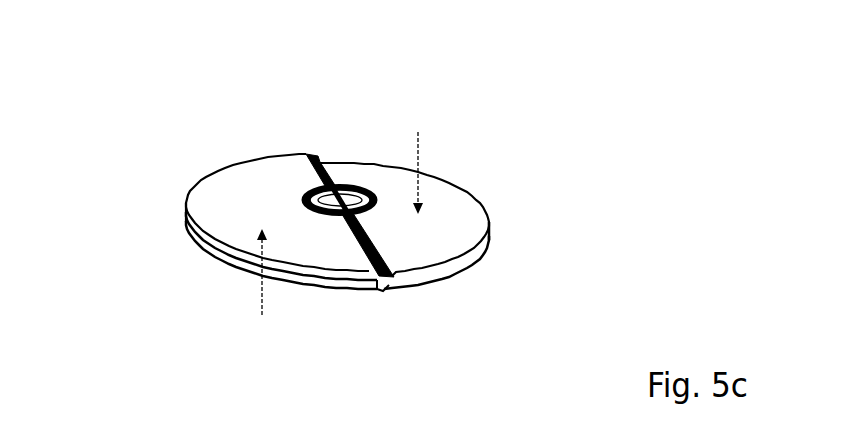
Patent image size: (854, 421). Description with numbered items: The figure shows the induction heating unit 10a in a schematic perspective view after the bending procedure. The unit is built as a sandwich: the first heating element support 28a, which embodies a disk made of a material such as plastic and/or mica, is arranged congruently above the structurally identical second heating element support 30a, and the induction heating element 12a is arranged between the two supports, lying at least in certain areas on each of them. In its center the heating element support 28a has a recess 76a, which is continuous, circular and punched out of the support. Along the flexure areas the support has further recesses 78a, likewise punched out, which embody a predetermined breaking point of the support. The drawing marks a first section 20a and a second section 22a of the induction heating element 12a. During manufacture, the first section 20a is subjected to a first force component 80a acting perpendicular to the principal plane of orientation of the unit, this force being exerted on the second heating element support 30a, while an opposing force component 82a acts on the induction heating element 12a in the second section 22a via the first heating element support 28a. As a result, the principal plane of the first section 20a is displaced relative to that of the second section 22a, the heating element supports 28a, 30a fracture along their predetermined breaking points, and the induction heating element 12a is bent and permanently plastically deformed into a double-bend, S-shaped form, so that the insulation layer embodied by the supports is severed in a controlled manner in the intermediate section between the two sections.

The induction heating unit 10a is at (164, 177).
The first section 20a is at (315, 157).
The second section 22a is at (487, 212).
The further recesses 78a is at (367, 194).
The recess 76a is at (305, 187).
The first force component 80a is at (258, 300).
The force component 82a is at (420, 150).
The first heating element support 28a is at (425, 247).
The second heating element support 30a is at (302, 289).
The induction heating element 12a is at (376, 284).